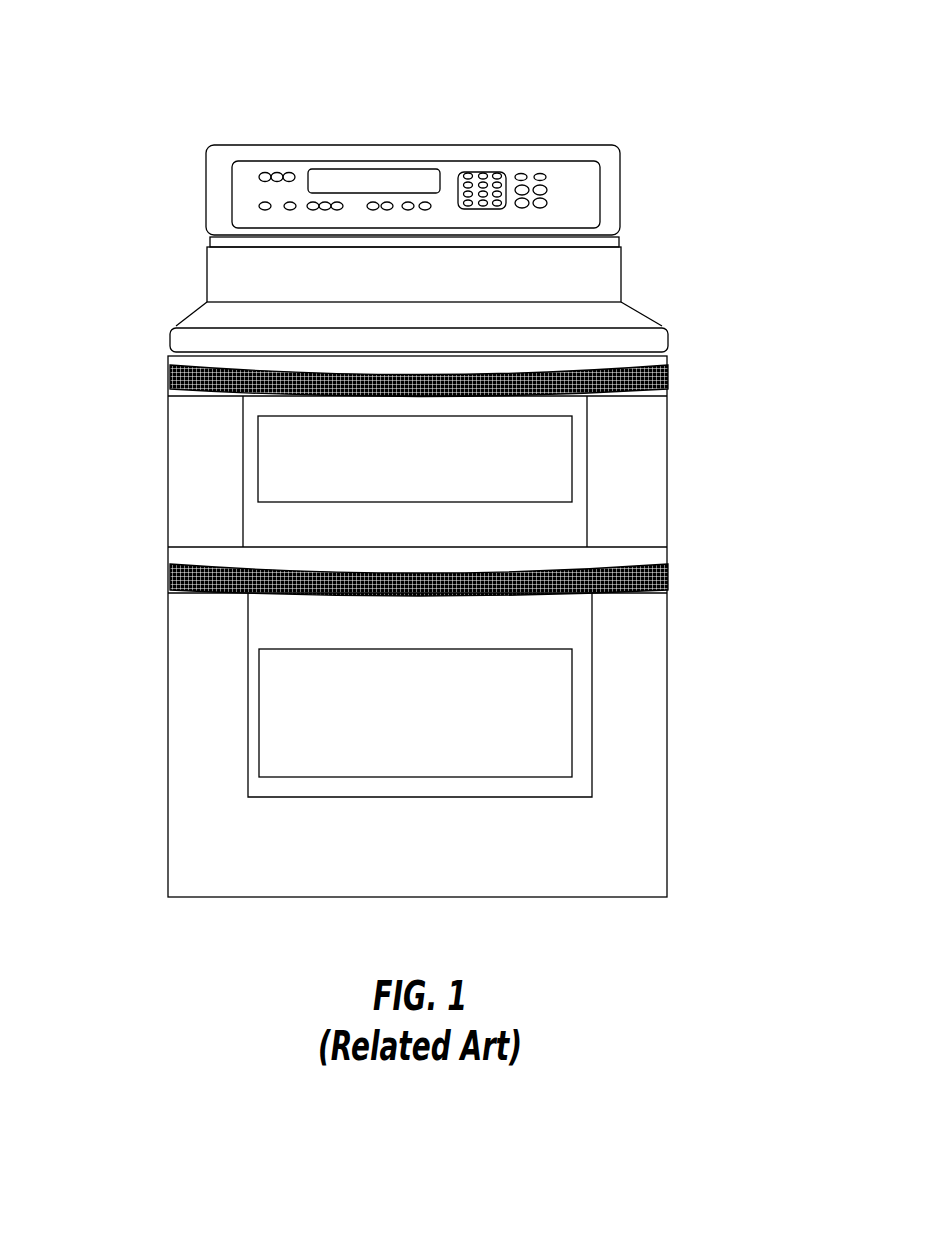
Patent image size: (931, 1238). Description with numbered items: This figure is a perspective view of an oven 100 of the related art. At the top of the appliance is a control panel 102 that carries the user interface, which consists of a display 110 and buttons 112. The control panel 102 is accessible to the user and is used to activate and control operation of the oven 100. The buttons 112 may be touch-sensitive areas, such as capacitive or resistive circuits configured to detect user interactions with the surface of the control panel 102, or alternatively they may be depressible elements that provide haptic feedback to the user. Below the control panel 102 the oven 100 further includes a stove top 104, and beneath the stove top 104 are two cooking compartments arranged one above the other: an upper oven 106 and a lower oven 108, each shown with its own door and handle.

The oven 100 is at (107, 103).
The control panel 102 is at (245, 197).
The stove top 104 is at (228, 318).
The upper oven 106 is at (198, 458).
The lower oven 108 is at (197, 702).
The display 110 is at (420, 160).
The buttons 112 is at (278, 174).